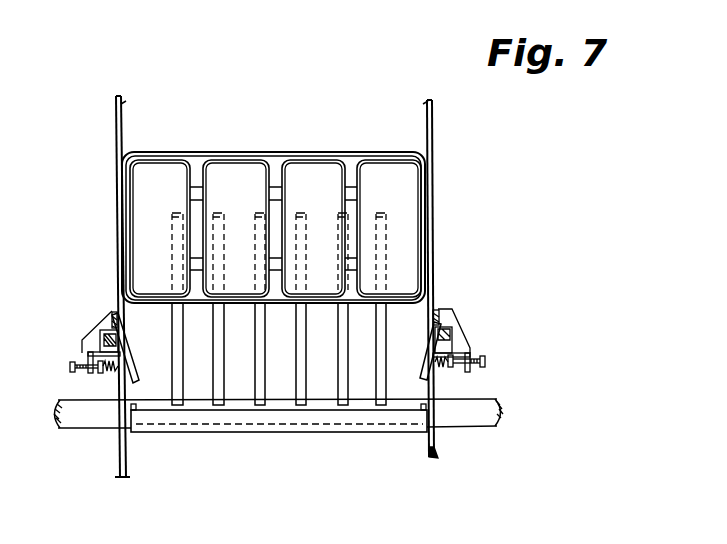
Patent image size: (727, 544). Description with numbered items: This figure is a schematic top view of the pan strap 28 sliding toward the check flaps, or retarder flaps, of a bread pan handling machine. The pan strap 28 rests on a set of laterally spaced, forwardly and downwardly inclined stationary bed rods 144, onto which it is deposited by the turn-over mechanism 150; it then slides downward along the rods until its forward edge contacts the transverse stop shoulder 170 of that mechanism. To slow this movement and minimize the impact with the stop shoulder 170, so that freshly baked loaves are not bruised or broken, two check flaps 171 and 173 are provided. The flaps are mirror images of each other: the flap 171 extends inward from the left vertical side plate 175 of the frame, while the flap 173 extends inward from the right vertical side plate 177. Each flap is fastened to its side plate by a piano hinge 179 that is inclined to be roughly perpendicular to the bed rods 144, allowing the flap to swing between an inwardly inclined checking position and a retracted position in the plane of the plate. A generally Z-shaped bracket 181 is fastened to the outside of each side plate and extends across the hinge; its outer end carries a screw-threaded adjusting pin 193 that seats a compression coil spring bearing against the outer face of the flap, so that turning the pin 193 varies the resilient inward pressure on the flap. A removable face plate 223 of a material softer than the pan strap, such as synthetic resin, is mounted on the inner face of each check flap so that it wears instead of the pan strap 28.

The pan strap 28 is at (412, 190).
The bed rods 144 is at (386, 404).
The turn-over mechanism 150 is at (478, 419).
The stop shoulder 170 is at (148, 434).
The check flap 171 is at (133, 379).
The check flap 173 is at (428, 378).
The side plate 175 is at (117, 139).
The side plate 177 is at (432, 120).
The piano hinge 179 is at (115, 323).
The Z-shaped bracket 181 is at (88, 352).
The adjusting pin 193 is at (471, 353).
The face plate 223 is at (121, 352).